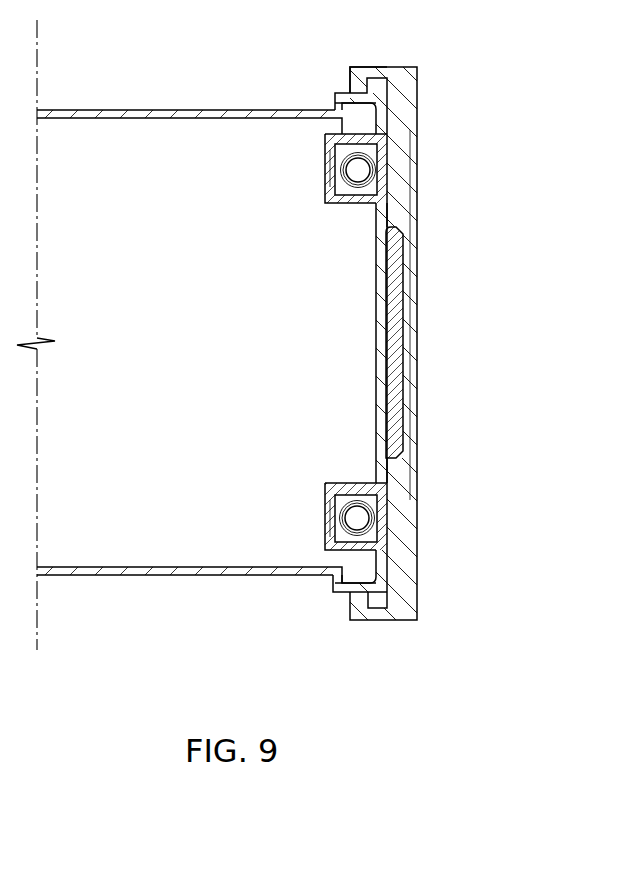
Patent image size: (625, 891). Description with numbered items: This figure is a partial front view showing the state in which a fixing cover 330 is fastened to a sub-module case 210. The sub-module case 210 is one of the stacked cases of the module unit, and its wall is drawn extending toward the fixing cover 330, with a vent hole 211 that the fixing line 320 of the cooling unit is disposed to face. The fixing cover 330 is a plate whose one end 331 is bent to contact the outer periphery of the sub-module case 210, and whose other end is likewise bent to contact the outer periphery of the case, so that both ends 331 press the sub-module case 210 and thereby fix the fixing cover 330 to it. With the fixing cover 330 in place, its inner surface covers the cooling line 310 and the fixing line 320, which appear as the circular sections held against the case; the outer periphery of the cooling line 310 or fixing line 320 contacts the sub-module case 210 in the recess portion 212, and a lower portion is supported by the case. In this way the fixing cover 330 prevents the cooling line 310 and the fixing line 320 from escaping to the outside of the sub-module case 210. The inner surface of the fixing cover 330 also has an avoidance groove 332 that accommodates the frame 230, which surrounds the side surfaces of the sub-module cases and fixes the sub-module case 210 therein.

The sub-module case 210 is at (112, 108).
The vent hole 211 is at (323, 170).
The recess portion 212 is at (380, 130).
The frame 230 is at (395, 254).
The cooling line 310 is at (383, 170).
The fixing line 320 is at (383, 190).
The fixing cover 330 is at (400, 98).
The end of the fixing cover 331 is at (334, 71).
The avoidance groove 332 is at (388, 217).